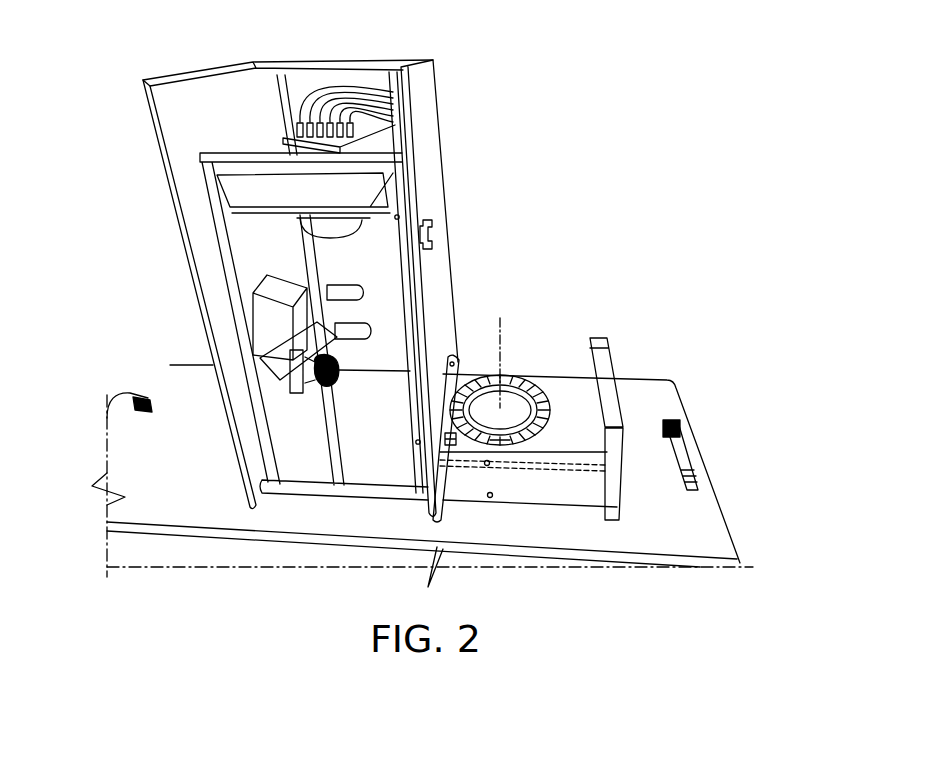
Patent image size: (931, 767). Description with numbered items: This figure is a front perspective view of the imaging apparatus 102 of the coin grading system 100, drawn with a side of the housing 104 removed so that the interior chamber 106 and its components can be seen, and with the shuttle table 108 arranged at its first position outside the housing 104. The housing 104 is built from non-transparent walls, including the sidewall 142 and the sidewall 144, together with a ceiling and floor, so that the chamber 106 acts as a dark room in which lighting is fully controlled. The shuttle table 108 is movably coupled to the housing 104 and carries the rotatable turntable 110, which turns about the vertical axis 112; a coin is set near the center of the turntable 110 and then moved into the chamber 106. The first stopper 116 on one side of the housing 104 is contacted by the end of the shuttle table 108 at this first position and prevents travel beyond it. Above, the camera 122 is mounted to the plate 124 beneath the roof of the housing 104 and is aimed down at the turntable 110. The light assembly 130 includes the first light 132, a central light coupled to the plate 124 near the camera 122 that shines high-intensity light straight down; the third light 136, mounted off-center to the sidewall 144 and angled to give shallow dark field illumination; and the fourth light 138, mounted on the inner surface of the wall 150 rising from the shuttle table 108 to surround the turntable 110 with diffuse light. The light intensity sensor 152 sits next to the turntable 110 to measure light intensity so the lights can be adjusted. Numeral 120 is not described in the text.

The grading system 100 is at (473, 44).
The imaging apparatus 102 is at (446, 83).
The housing 104 is at (427, 132).
The chamber 106 is at (282, 257).
The shuttle table 108 is at (587, 473).
The turntable 110 is at (543, 372).
The vertical axis 112 is at (505, 332).
The first stopper 116 is at (660, 462).
The inner frame 120 is at (234, 224).
The camera 122 is at (295, 200).
The plate 124 is at (283, 140).
The light assembly 130 is at (298, 360).
The first light 132 is at (368, 236).
The third light 136 is at (338, 368).
The fourth light 138 is at (486, 372).
The sidewall 142 is at (437, 214).
The sidewall 144 is at (210, 352).
The wall 150 is at (500, 440).
The light intensity sensor 152 is at (500, 437).